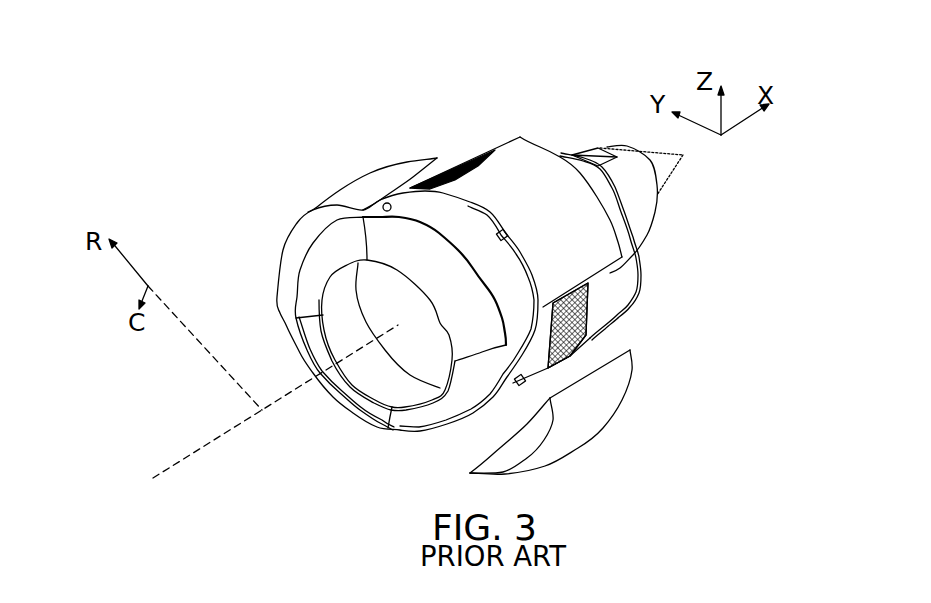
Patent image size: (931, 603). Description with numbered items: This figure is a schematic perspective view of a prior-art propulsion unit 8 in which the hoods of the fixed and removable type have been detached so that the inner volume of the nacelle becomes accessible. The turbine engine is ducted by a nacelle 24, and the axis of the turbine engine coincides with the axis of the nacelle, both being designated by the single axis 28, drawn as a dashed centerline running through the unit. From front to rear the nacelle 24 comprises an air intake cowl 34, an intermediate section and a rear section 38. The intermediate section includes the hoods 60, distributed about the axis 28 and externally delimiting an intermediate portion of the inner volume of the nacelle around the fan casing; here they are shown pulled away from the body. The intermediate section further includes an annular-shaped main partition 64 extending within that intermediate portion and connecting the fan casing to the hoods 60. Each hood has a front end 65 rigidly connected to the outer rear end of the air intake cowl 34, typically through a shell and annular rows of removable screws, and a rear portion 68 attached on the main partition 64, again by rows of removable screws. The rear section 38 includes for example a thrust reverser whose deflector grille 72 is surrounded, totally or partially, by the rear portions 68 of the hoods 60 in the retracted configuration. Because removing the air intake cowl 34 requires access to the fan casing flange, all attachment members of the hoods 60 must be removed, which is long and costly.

The propulsion unit 8 is at (407, 232).
The nacelle 24 is at (404, 112).
The axis 28 is at (187, 462).
The air intake cowl 34 is at (352, 404).
The rear section 38 is at (625, 274).
The hoods 60 is at (363, 187).
The main partition 64 is at (538, 330).
The front ends 65 is at (530, 206).
The rear portions 68 is at (548, 134).
The grille 72 is at (592, 315).